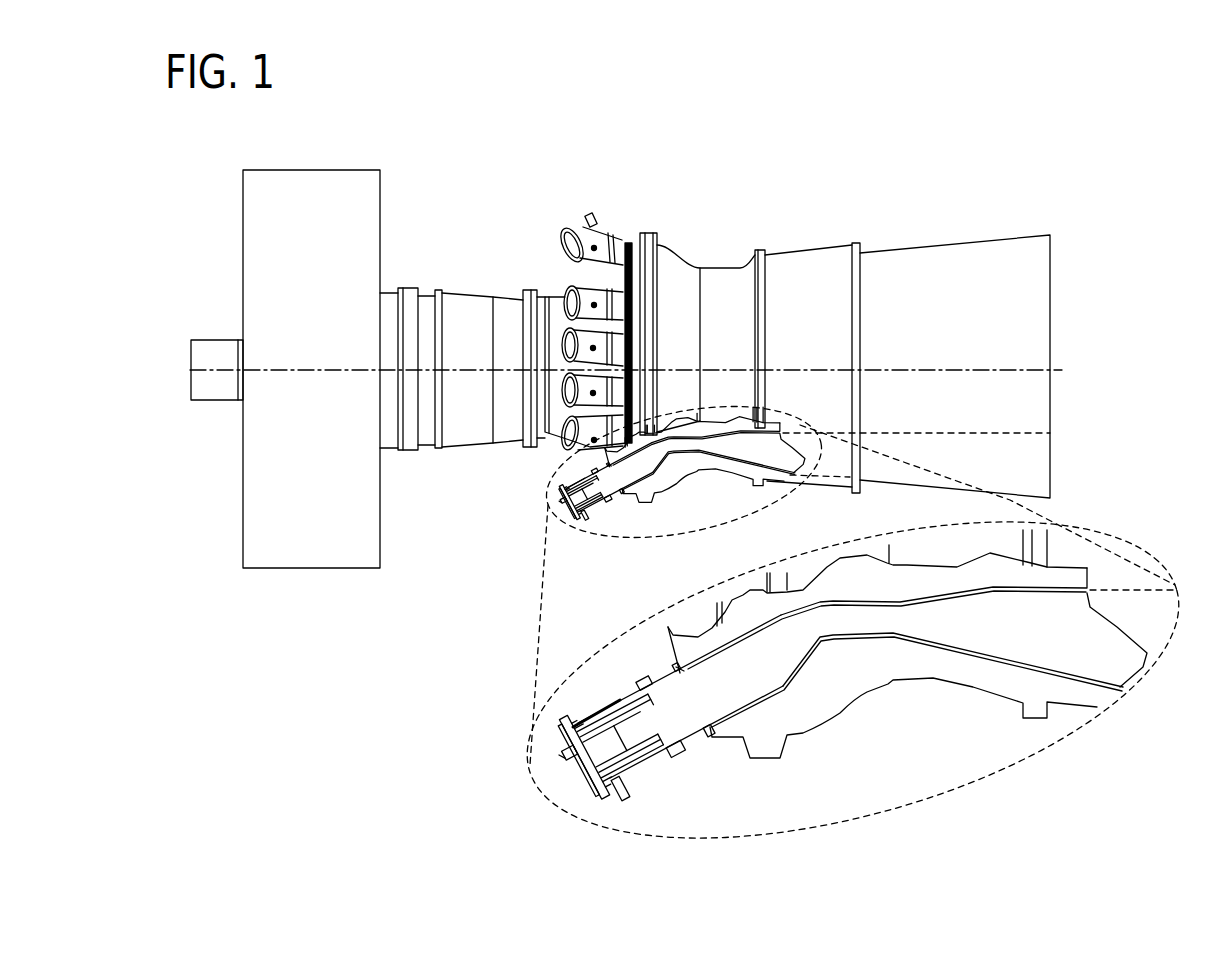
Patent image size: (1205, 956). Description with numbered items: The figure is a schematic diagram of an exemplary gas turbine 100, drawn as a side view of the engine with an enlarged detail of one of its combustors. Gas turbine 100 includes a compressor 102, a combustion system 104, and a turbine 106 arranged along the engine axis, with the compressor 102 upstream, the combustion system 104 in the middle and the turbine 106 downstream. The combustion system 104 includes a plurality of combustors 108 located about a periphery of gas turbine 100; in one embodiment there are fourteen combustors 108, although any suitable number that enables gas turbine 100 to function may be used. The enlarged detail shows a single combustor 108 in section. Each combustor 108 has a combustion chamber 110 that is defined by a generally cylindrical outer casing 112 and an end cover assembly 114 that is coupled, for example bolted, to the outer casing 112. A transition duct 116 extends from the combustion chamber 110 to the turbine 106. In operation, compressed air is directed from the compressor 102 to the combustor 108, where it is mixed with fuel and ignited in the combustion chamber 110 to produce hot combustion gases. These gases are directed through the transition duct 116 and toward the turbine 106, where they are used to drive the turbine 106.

The gas turbine 100 is at (390, 147).
The compressor 102 is at (436, 243).
The combustion system 104 is at (661, 190).
The turbine 106 is at (875, 197).
The combustor 108 is at (656, 796).
The combustion chamber 110 is at (618, 742).
The outer casing 112 is at (643, 765).
The end cover assembly 114 is at (573, 790).
The transition duct 116 is at (752, 667).